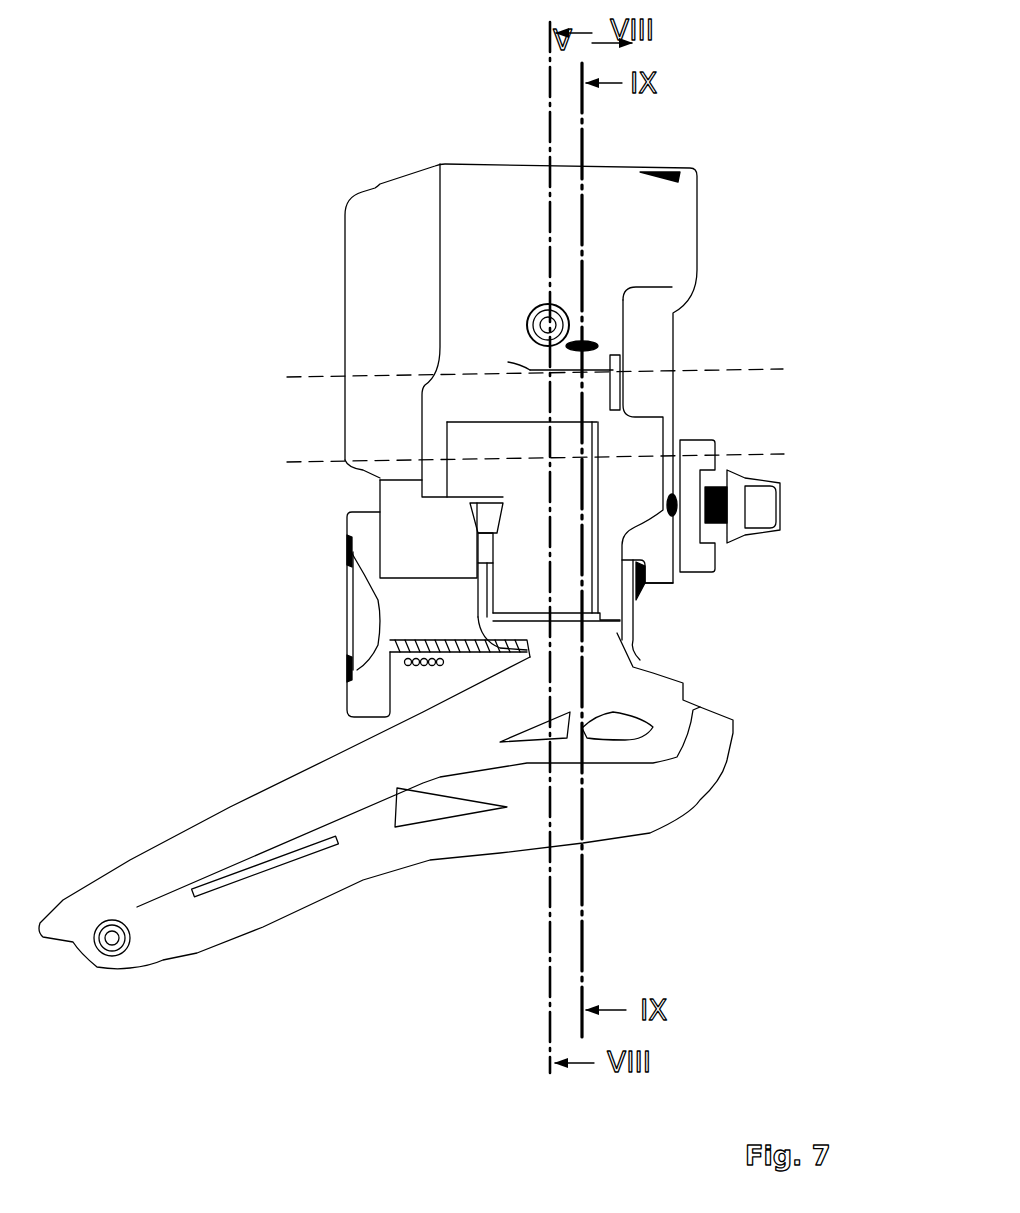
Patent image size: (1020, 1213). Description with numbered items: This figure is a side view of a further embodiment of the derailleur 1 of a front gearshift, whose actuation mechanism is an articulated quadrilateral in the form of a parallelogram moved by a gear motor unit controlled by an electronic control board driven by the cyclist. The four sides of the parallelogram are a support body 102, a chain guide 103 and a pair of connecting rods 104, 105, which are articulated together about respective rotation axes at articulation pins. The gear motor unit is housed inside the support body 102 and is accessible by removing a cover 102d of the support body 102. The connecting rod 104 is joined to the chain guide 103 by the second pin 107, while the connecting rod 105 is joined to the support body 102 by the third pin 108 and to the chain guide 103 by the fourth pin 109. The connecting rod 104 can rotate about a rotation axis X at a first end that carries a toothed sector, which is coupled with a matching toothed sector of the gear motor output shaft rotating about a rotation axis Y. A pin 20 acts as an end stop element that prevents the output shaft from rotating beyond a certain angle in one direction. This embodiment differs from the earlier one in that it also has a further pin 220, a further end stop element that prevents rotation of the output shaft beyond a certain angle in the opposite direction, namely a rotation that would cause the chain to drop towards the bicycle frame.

The derailleur 1 is at (291, 151).
The support body 102 is at (670, 220).
The cover 102d is at (388, 262).
The pin 20 is at (572, 320).
The further pin 220 is at (600, 346).
The connecting rod 104 is at (580, 518).
The second pin 107 is at (650, 594).
The connecting rod 105 is at (400, 613).
The third pin 108 is at (345, 548).
The fourth pin 109 is at (347, 690).
The chain guide 103 is at (440, 848).